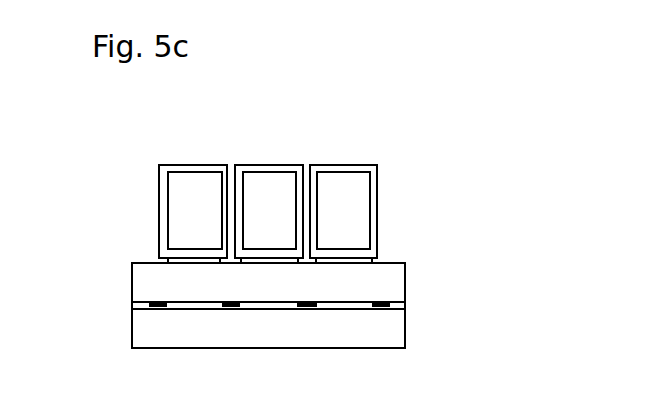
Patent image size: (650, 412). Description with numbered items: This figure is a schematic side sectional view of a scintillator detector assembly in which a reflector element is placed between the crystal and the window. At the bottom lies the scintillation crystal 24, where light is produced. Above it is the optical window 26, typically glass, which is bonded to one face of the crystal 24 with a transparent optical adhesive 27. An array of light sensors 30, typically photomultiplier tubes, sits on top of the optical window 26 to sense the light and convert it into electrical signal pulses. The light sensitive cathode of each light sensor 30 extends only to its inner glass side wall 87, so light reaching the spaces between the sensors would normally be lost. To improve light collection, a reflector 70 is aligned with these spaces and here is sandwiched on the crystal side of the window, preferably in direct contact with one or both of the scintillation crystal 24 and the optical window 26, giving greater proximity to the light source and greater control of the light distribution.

The inner glass side wall 87 is at (377, 163).
The light sensors 30 is at (268, 214).
The optical window 26 is at (268, 282).
The transparent optical adhesive 27 is at (383, 315).
The reflector 70 is at (230, 310).
The scintillation crystal 24 is at (268, 328).